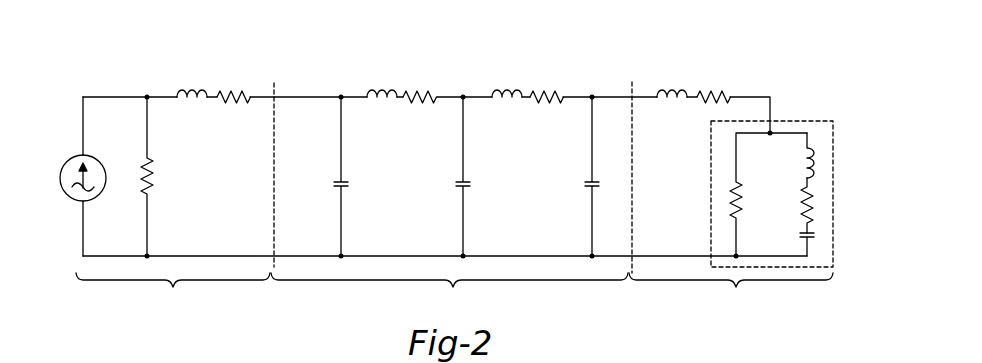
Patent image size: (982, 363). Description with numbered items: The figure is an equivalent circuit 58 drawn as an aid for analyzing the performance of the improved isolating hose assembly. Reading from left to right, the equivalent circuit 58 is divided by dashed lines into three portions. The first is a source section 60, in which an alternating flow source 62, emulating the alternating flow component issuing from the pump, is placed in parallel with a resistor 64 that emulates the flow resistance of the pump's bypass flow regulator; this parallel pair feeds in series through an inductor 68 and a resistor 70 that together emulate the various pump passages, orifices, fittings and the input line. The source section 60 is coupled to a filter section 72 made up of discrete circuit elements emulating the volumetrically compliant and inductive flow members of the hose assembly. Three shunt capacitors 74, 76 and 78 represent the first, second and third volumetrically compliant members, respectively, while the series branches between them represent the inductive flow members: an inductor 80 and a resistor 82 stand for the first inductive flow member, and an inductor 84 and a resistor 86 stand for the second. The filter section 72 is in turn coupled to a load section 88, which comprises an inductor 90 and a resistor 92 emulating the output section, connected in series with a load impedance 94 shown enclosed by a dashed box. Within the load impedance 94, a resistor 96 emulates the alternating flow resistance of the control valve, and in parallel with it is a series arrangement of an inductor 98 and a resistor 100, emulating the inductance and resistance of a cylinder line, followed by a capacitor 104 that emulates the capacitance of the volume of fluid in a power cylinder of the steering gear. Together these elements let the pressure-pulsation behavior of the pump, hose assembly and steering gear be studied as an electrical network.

The equivalent circuit 58 is at (635, 46).
The source section 60 is at (173, 295).
The alternating flow source 62 is at (66, 161).
The resistor 64 is at (143, 187).
The inductor 68 is at (184, 92).
The resistor 70 is at (222, 93).
The filter section 72 is at (449, 295).
The capacitor 74 is at (340, 182).
The capacitor 76 is at (462, 184).
The capacitor 78 is at (591, 182).
The inductor 80 is at (382, 90).
The resistor 82 is at (420, 94).
The inductor 84 is at (506, 90).
The resistor 86 is at (549, 92).
The load section 88 is at (731, 295).
The inductor 90 is at (674, 92).
The resistor 92 is at (715, 91).
The load impedance 94 is at (833, 147).
The resistor 96 is at (734, 185).
The inductor 98 is at (813, 144).
The resistor 100 is at (805, 200).
The capacitor 104 is at (800, 248).